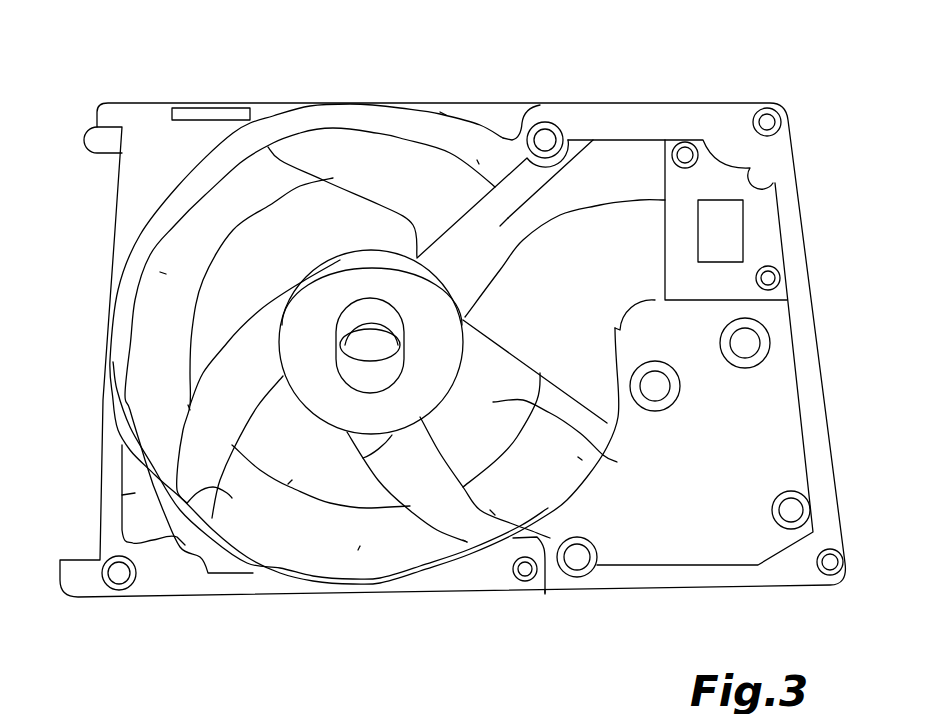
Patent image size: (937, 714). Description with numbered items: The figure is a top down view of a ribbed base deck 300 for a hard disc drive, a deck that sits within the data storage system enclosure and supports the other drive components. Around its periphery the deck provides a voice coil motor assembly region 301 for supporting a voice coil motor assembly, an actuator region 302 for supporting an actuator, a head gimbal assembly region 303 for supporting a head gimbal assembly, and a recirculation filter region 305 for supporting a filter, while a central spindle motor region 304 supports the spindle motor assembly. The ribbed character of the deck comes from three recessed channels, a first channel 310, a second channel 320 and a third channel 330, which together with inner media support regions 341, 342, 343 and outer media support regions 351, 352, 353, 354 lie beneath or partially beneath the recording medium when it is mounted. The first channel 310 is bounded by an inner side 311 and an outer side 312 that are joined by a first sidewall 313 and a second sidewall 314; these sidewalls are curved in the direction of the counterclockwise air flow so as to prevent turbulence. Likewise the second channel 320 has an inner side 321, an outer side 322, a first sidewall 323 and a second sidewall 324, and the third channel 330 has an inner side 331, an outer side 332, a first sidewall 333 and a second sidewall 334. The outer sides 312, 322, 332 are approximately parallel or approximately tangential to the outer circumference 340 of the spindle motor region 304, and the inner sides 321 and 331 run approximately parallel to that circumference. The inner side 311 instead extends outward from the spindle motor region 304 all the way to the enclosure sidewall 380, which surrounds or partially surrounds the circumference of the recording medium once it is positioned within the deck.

The ribbed base deck 300 is at (84, 124).
The voice coil motor assembly region 301 is at (727, 448).
The actuator region 302 is at (607, 270).
The head gimbal assembly region 303 is at (593, 140).
The spindle motor region 304 is at (345, 298).
The recirculation filter region 305 is at (133, 493).
The first channel 310 is at (443, 112).
The inner side 311 is at (412, 243).
The outer side 312 is at (268, 147).
The first sidewall 313 is at (441, 172).
The second sidewall 314 is at (353, 187).
The second channel 320 is at (190, 405).
The inner side 321 is at (278, 345).
The outer side 322 is at (224, 506).
The first sidewall 323 is at (200, 405).
The second sidewall 324 is at (233, 450).
The third channel 330 is at (442, 493).
The inner side 331 is at (368, 457).
The outer side 332 is at (547, 593).
The first sidewall 333 is at (467, 542).
The second sidewall 334 is at (494, 510).
The outer circumference 340 is at (443, 392).
The inner media support region 341 is at (332, 215).
The inner media support region 342 is at (290, 482).
The inner media support region 343 is at (615, 462).
The outer media support region 351 is at (477, 160).
The outer media support region 352 is at (165, 273).
The outer media support region 353 is at (358, 550).
The outer media support region 354 is at (578, 457).
The enclosure sidewall 380 is at (437, 110).